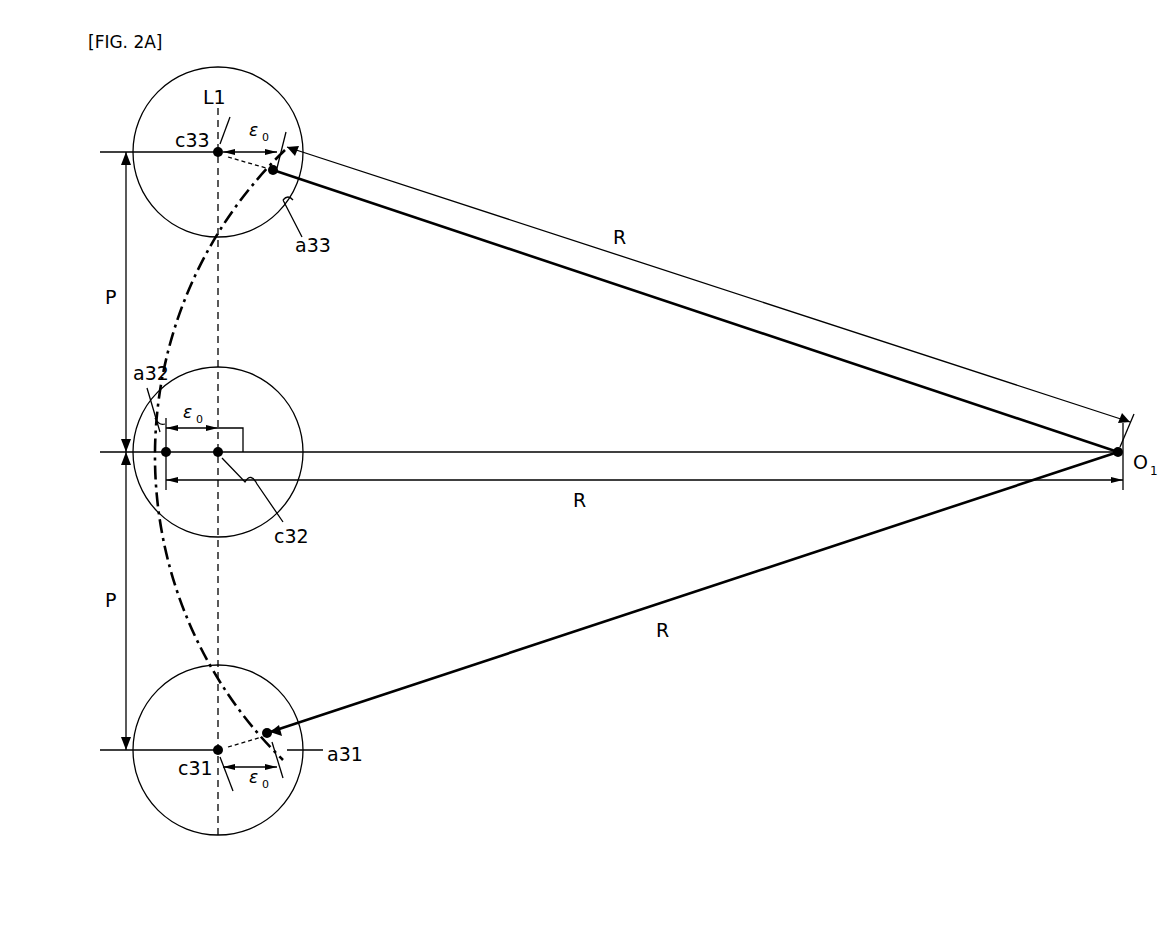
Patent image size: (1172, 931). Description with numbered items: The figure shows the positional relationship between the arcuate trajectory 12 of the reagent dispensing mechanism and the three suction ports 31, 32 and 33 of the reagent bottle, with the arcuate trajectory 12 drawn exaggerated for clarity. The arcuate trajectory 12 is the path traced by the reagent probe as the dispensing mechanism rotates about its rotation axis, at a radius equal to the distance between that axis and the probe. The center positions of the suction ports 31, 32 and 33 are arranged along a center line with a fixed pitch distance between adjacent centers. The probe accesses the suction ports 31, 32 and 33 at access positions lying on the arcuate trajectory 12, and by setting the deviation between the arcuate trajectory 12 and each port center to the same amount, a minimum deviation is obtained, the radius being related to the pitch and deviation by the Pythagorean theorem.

The arcuate trajectory 12 is at (235, 455).
The suction port 31 is at (243, 748).
The suction port 32 is at (253, 452).
The suction port 33 is at (258, 152).